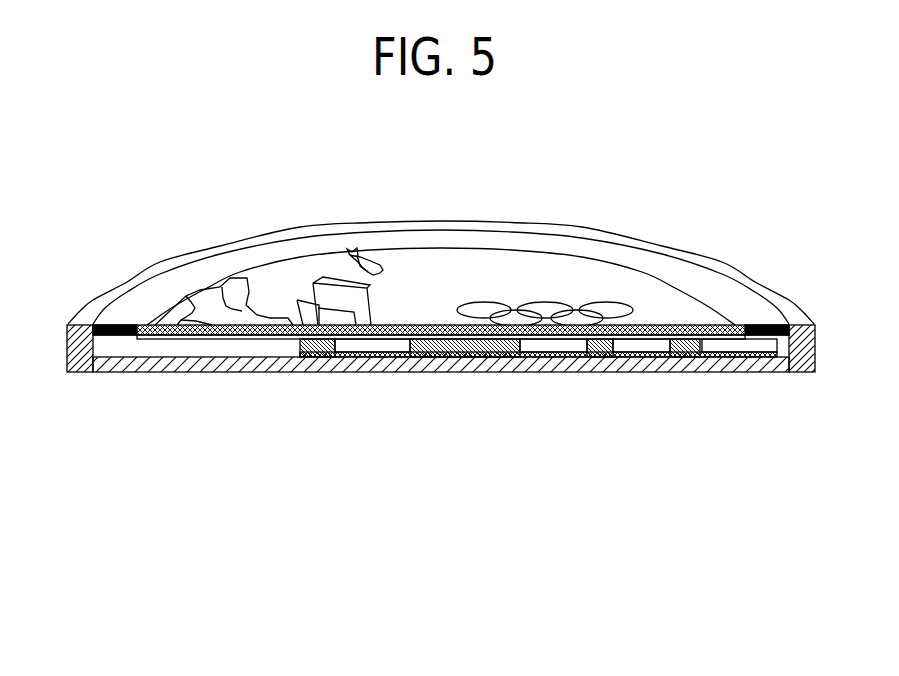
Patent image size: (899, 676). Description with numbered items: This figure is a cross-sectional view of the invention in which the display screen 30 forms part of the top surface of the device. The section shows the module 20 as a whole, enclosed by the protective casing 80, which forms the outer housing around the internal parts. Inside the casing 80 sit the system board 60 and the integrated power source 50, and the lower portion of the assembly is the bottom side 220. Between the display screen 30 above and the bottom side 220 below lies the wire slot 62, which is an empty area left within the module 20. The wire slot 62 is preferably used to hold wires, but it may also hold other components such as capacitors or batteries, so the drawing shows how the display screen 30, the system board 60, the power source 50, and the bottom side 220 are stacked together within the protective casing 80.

The module 20 is at (642, 268).
The display screen 30 is at (697, 307).
The integrated power source 50 is at (757, 303).
The protective casing 80 is at (815, 347).
The wire slot 62 is at (273, 348).
The bottom side 220 is at (388, 362).
The system board 60 is at (497, 350).